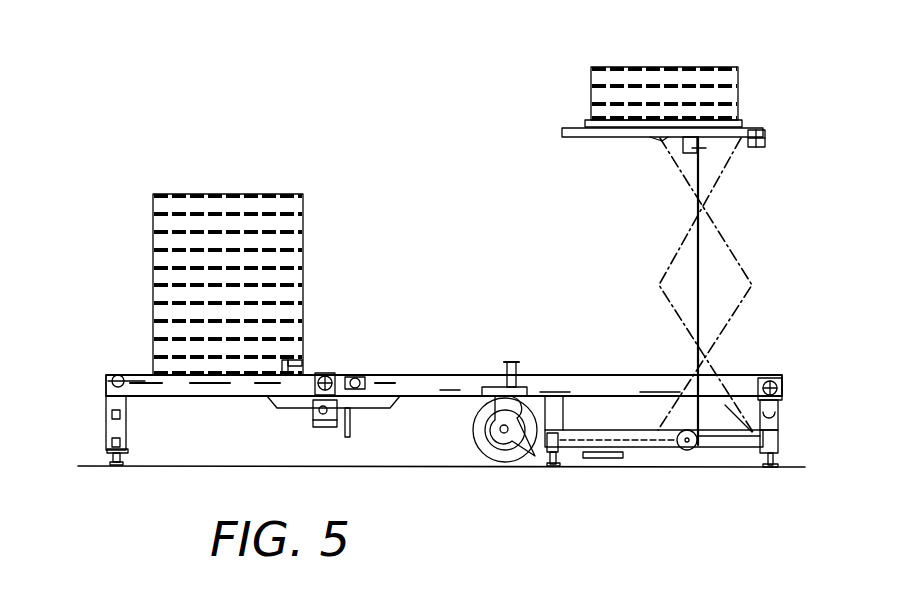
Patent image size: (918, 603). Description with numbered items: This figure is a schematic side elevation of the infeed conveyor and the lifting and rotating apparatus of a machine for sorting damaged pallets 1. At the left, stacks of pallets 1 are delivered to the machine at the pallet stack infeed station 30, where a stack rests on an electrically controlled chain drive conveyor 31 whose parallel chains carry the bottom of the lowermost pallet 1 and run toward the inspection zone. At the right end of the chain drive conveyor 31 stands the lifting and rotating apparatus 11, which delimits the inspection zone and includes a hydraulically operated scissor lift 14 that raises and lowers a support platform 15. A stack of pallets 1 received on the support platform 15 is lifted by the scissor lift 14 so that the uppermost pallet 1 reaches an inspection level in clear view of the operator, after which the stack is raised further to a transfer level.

The pallet 1 is at (160, 272).
The lifting and rotating apparatus 11 is at (805, 299).
The scissor lift 14 is at (748, 140).
The support platform 15 is at (750, 128).
The pallet stack infeed station 30 is at (88, 368).
The chain drive conveyor 31 is at (413, 372).